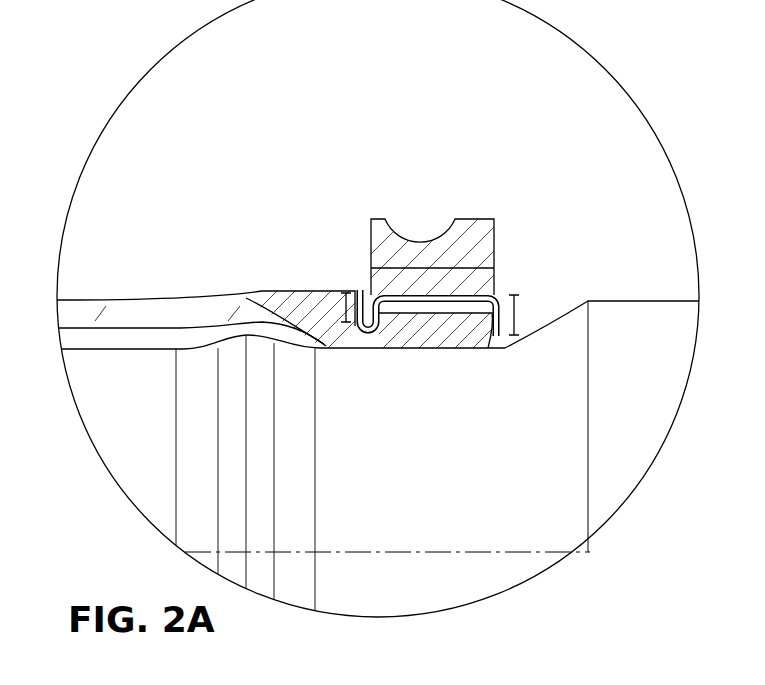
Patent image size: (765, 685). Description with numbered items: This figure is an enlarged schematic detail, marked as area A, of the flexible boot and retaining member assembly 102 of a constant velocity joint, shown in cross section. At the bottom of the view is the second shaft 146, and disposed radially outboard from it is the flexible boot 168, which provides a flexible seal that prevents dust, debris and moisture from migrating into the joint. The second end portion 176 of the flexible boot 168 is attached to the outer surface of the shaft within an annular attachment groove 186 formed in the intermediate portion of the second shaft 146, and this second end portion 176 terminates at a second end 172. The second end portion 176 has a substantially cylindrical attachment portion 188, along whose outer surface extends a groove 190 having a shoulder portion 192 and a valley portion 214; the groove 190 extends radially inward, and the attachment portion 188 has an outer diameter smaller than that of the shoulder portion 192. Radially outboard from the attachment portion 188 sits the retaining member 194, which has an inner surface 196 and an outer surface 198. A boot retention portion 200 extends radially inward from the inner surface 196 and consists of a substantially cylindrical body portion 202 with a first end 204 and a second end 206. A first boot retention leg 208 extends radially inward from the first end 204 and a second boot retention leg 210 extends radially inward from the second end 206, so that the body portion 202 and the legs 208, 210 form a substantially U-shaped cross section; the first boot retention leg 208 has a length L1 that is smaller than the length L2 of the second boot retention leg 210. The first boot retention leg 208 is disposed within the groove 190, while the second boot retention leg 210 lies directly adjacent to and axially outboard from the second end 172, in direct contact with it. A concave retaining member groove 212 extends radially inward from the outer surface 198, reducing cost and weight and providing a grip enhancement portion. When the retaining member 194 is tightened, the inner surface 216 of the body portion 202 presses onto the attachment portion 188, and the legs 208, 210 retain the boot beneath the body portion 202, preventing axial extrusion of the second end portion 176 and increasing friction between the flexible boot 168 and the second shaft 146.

The detail area A is at (82, 158).
The gas turbine engine assembly 102 is at (286, 128).
The second shaft 146 is at (152, 424).
The flexible boot 168 is at (82, 306).
The second end 172 is at (502, 347).
The second end portion 176 is at (147, 308).
The annular attachment groove 186 is at (360, 352).
The substantially cylindrical attachment portion 188 is at (430, 332).
The groove 190 is at (262, 297).
The shoulder portion 192 is at (318, 291).
The retaining member 194 is at (494, 236).
The inner surface 196 is at (484, 295).
The outer surface 198 is at (494, 221).
The boot retention portion 200 is at (428, 302).
The substantially cylindrical body portion 202 is at (446, 240).
The first end 204 is at (368, 294).
The second end 206 is at (503, 297).
The first boot retention leg 208 is at (352, 342).
The second boot retention leg 210 is at (470, 350).
The retaining member groove 212 is at (413, 240).
The valley portion 214 is at (280, 336).
The inner surface 216 is at (378, 350).
The length L1 is at (345, 292).
The length L2 is at (518, 313).